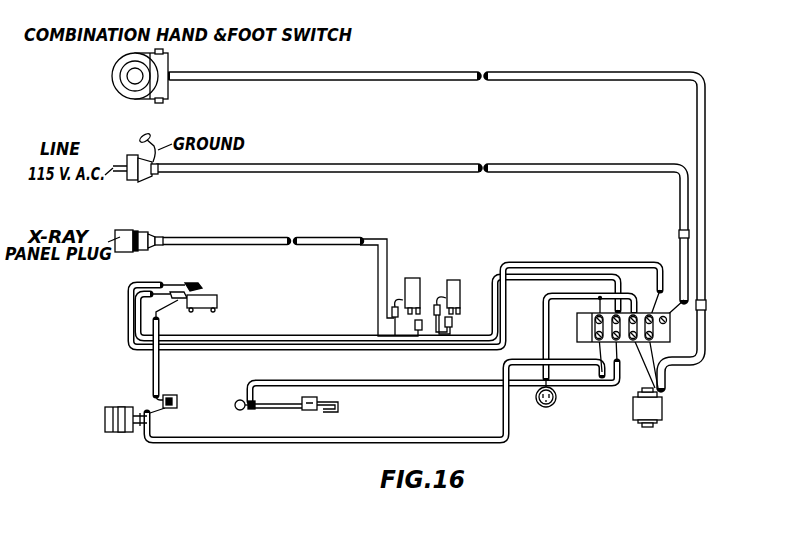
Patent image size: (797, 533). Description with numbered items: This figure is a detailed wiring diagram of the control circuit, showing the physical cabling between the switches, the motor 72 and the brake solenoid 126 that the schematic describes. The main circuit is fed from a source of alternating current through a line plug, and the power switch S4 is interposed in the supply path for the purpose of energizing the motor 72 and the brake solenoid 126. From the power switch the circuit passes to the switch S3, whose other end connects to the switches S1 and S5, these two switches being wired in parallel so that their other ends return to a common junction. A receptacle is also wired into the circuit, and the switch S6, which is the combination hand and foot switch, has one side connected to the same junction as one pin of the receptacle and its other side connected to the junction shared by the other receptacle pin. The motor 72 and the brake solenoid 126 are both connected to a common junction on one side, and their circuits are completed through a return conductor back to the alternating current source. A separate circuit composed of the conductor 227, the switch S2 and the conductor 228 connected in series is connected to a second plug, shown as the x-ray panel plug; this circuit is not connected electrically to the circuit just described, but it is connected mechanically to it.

The switch S6 is at (113, 73).
The switch S5 is at (177, 400).
The power switch S4 is at (302, 401).
The switch S3 is at (217, 297).
The switch S2 is at (413, 265).
The switch S1 is at (453, 265).
The brake solenoid 126 is at (116, 432).
The motor 72 is at (662, 408).
The conductor 227 is at (378, 272).
The conductor 228 is at (389, 247).